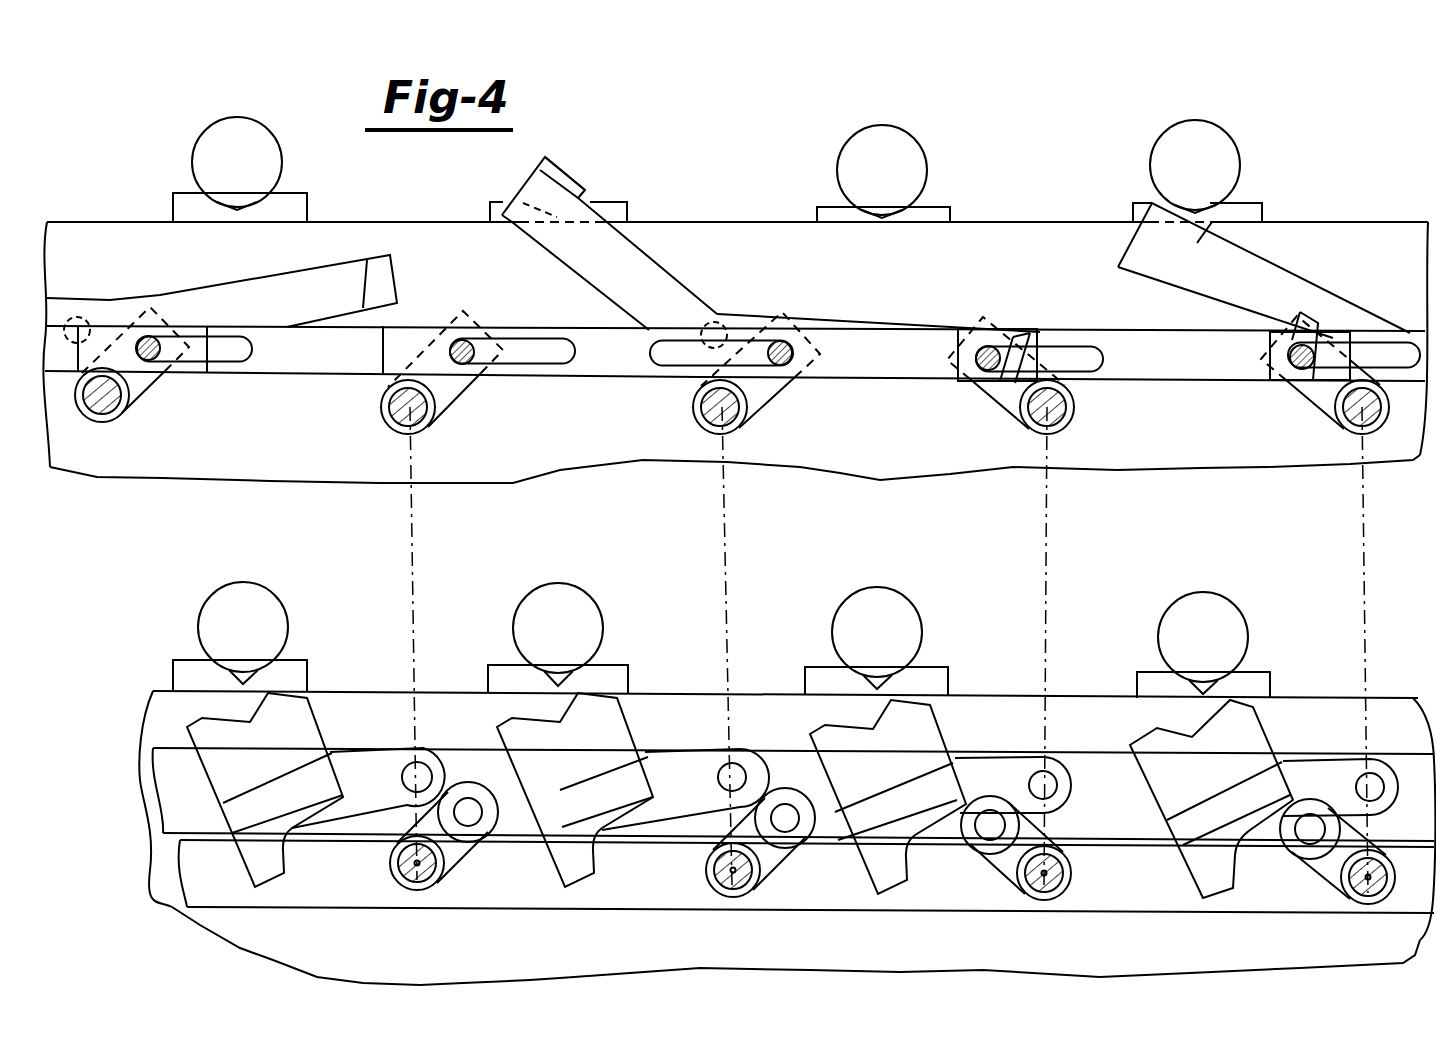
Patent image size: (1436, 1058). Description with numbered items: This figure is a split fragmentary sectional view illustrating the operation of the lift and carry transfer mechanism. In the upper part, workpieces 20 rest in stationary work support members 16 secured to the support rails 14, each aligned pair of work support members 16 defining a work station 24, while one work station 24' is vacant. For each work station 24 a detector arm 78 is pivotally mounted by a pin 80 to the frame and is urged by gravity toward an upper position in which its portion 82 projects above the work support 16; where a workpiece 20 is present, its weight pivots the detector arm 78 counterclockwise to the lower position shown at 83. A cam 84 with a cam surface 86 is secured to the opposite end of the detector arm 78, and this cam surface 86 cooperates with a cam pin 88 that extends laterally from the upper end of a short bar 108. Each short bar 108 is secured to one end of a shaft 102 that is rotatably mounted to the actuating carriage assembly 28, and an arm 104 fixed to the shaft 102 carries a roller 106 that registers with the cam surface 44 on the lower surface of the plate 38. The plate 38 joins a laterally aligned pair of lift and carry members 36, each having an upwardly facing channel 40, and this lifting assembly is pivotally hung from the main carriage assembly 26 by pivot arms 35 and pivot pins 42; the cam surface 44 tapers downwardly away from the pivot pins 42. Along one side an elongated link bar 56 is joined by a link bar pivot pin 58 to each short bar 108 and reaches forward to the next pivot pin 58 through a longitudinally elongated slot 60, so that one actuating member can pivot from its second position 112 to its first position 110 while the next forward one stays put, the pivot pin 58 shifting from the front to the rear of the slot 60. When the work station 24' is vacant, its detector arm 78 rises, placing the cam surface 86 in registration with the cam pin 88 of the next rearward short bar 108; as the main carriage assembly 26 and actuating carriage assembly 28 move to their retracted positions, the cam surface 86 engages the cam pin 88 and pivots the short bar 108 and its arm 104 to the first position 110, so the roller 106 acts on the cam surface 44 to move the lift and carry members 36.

The support rails 14 is at (768, 222).
The work support members 16 is at (617, 207).
The workpiece 20 is at (915, 170).
The work station 24 is at (1082, 97).
The vacant work station 24' is at (619, 113).
The main carriage assembly 26 is at (1403, 767).
The actuating carriage assembly 28 is at (1257, 917).
The pivot arms 35 is at (687, 767).
The lift and carry members 36 is at (613, 727).
The plate 38 is at (1195, 825).
The upwardly facing channel 40 is at (1160, 728).
The pivot pins 42 is at (735, 768).
The cam surface 44 is at (1272, 900).
The link bar 56 is at (588, 335).
The link bar pivot pin 58 is at (142, 333).
The slot 60 is at (251, 356).
The detector arm 78 is at (630, 255).
The pin 80 is at (712, 323).
The portion 82 is at (552, 171).
The lower position 83 is at (1300, 247).
The cam 84 is at (1033, 333).
The cam surface 86 is at (1005, 330).
The cam pin 88 is at (462, 340).
The shaft 102 is at (88, 412).
The arm 104 is at (457, 860).
The roller 106 is at (492, 822).
The short bar 108 is at (133, 412).
The first position 110 is at (1001, 898).
The second position 112 is at (376, 871).